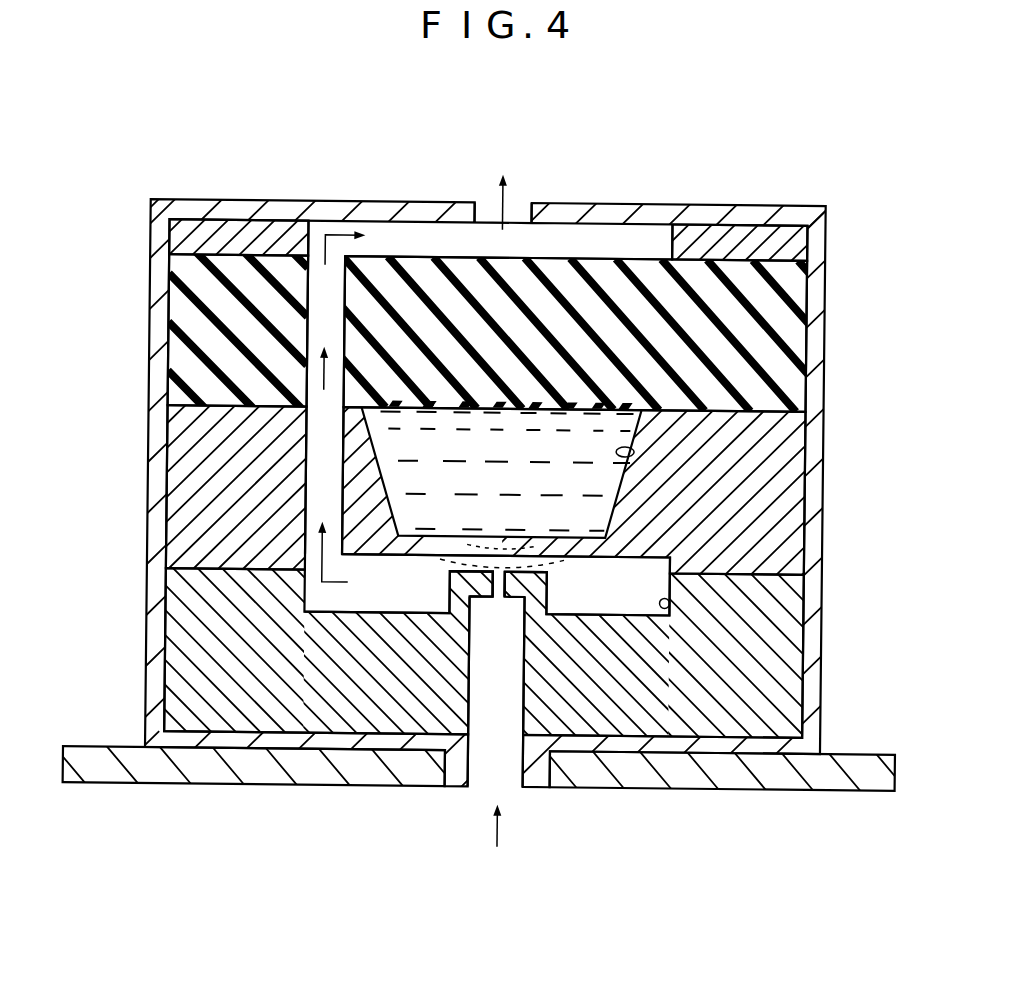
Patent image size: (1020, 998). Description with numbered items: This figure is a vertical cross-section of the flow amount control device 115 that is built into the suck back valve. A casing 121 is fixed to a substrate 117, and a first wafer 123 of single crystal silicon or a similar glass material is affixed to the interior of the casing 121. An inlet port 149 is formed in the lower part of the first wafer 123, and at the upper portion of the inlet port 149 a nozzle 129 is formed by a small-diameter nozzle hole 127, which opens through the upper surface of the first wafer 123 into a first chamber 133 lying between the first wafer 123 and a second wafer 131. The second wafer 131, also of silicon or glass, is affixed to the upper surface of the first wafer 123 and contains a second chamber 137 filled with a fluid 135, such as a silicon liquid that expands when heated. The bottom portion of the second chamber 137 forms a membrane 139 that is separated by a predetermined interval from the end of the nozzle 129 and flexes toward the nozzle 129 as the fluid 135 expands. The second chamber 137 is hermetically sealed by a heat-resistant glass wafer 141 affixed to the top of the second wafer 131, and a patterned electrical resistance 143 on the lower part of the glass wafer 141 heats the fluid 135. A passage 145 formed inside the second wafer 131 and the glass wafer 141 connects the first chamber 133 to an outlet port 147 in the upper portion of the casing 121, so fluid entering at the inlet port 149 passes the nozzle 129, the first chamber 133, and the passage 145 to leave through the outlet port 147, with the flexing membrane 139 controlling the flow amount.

The flow amount control device 115 is at (486, 465).
The substrate 117 is at (208, 770).
The casing 121 is at (147, 336).
The first wafer 123 is at (768, 688).
The nozzle hole 127 is at (499, 580).
The nozzle 129 is at (527, 576).
The second wafer 131 is at (770, 533).
The first chamber 133 is at (668, 600).
The fluid 135 is at (637, 480).
The second chamber 137 is at (612, 446).
The membrane 139 is at (421, 545).
The glass wafer 141 is at (773, 357).
The electrical resistance 143 is at (608, 402).
The passage 145 is at (312, 451).
The outlet port 147 is at (471, 205).
The inlet port 149 is at (470, 710).